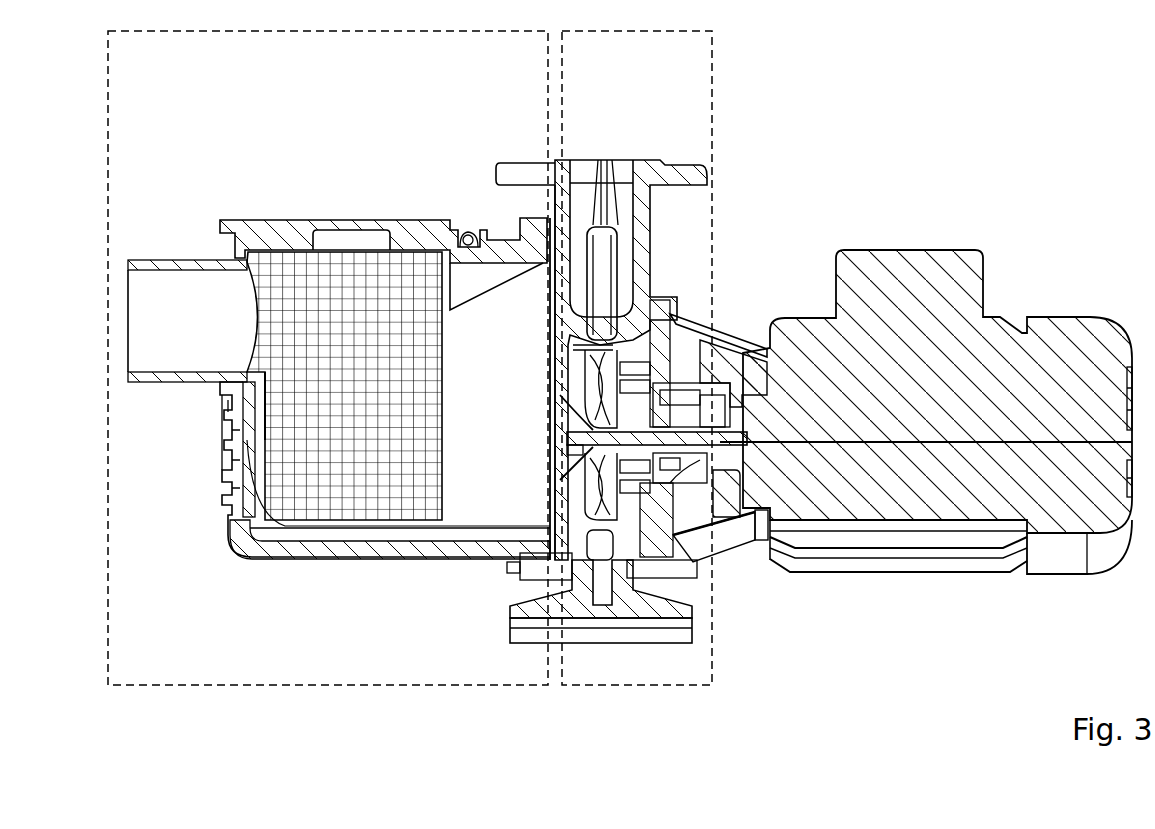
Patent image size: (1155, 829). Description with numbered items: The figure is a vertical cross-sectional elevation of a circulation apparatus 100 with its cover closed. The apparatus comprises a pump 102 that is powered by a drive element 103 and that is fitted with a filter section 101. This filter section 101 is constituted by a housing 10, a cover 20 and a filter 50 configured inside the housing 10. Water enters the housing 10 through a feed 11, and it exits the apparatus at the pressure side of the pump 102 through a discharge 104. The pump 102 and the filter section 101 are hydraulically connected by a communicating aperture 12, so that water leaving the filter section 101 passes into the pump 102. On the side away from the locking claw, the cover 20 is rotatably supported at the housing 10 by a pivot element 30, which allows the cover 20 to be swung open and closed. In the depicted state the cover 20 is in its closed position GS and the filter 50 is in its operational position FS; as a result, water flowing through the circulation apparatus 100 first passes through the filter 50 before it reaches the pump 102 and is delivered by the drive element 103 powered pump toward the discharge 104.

The circulation apparatus 100 is at (973, 118).
The filter section 101 is at (303, 687).
The pump 102 is at (625, 688).
The drive element 103 is at (915, 260).
The discharge 104 is at (617, 158).
The housing 10 is at (243, 537).
The feed 11 is at (172, 320).
The communicating aperture 12 is at (548, 432).
The cover 20 is at (302, 220).
The pivot element 30 is at (468, 237).
The filter 50 is at (290, 263).